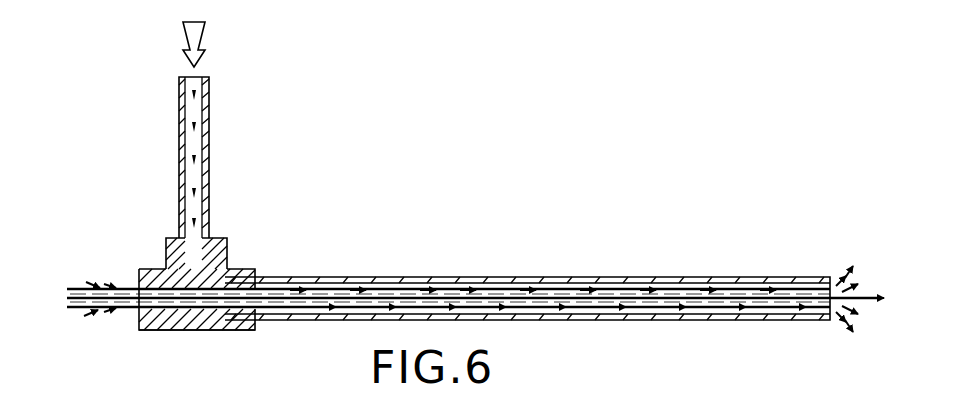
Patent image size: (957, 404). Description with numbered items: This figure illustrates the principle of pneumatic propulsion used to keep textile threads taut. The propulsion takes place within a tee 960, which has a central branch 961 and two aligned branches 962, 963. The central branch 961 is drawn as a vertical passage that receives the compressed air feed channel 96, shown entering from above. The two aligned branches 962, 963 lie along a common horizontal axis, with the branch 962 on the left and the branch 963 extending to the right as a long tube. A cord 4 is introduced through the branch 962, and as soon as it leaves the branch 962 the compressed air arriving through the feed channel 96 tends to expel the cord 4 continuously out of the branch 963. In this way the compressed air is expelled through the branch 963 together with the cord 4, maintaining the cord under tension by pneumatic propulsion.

The cord 4 is at (73, 290).
The compressed air feed channel 96 is at (209, 142).
The tee 960 is at (184, 330).
The central branch 961 is at (172, 238).
The branch 962 is at (123, 285).
The branch 963 is at (415, 277).